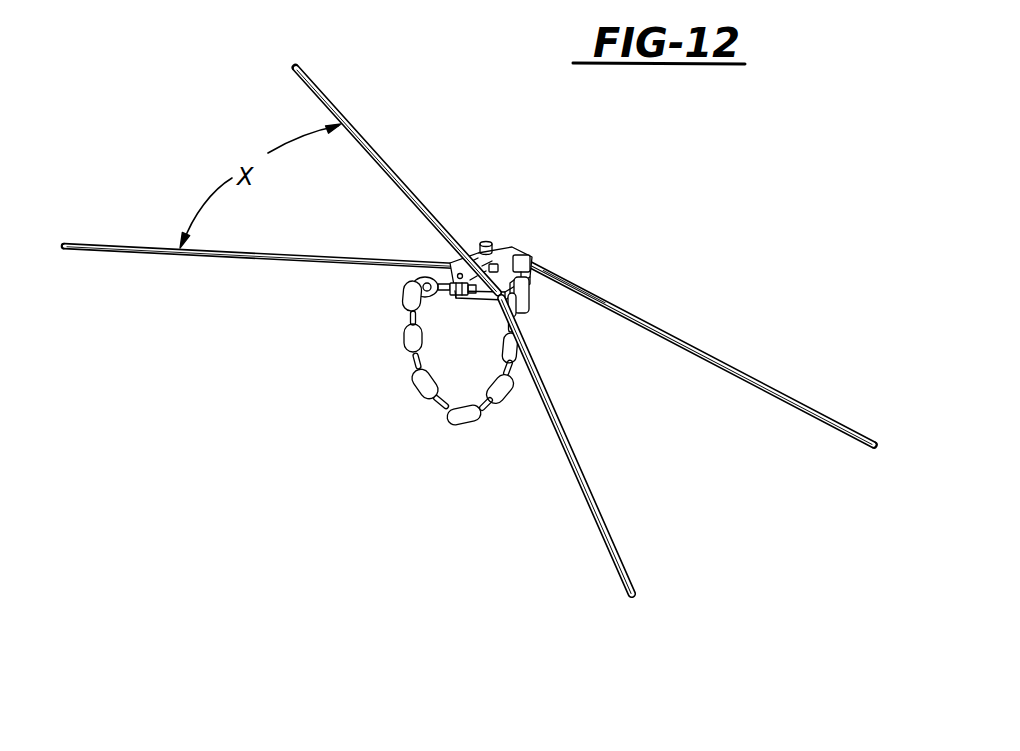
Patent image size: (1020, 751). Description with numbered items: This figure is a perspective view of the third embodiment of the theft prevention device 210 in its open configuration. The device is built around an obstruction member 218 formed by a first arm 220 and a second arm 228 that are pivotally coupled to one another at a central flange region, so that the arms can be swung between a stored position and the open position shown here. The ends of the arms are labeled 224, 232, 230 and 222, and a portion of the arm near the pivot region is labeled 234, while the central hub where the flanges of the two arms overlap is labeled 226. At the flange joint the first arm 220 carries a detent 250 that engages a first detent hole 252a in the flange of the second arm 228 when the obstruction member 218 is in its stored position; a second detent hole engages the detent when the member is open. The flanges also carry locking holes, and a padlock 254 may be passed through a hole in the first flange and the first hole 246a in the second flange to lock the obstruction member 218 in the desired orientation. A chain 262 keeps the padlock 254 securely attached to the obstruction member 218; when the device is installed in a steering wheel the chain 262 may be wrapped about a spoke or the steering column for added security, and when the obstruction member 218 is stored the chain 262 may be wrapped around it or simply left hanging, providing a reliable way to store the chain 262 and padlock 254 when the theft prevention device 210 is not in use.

The theft prevention device 210 is at (630, 170).
The obstruction member 218 is at (694, 330).
The first arm 220 is at (392, 162).
The leg arm 222 is at (633, 598).
The arm end 224 is at (312, 79).
The hub plate 226 is at (440, 223).
The second arm 228 is at (300, 263).
The arm end 230 is at (875, 448).
The arm end 232 is at (62, 246).
The arm portion 234 is at (570, 285).
The first hole 246a is at (522, 250).
The detent 250 is at (485, 240).
The first detent hole 252a is at (440, 252).
The padlock 254 is at (528, 297).
The chain 262 is at (447, 424).